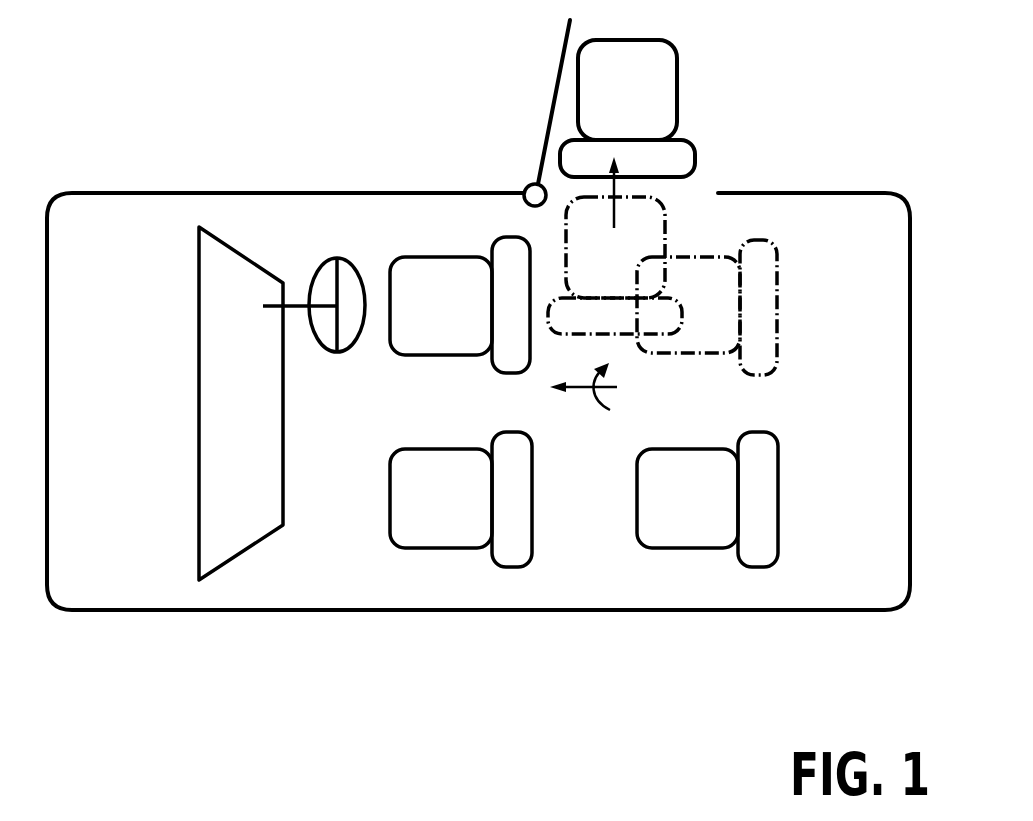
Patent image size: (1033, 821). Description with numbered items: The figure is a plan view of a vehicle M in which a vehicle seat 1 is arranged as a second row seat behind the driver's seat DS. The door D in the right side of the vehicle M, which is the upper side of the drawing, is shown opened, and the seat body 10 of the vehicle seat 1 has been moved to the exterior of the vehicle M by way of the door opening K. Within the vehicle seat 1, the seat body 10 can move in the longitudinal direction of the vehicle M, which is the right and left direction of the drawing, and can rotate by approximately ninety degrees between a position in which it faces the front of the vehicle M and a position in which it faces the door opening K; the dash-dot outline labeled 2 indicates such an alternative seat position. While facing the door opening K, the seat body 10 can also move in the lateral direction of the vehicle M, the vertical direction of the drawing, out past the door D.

The vehicle seat 1 is at (712, 108).
The seat body 10 is at (677, 65).
The door opening K is at (680, 203).
The rotated seat position 2 is at (784, 302).
The door D is at (555, 96).
The driver's seat DS is at (447, 295).
The vehicle M is at (690, 612).